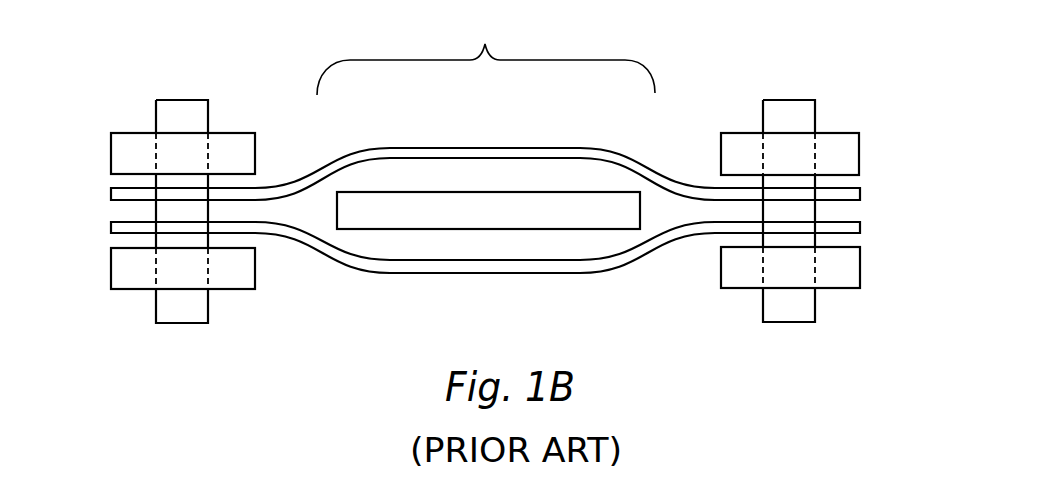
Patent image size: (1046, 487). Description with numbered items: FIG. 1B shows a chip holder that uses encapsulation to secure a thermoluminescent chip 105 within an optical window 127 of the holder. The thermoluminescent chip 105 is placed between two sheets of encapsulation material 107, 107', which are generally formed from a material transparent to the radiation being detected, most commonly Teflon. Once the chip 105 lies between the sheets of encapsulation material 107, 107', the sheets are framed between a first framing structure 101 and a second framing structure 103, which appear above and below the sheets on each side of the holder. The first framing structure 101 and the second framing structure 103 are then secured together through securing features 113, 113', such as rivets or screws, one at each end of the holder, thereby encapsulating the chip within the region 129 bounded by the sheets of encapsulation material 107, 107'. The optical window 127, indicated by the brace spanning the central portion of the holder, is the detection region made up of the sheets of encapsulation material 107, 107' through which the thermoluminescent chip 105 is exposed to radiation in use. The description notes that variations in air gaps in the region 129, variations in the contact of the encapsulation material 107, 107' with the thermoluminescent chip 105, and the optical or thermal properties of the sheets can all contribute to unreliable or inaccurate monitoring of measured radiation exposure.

The first framing structure 101 is at (111, 160).
The second framing structure 103 is at (111, 257).
The thermoluminescent chip 105 is at (518, 192).
The sheet of encapsulation material 107 is at (485, 145).
The sheet of encapsulation material 107' is at (485, 281).
The securing feature 113 is at (184, 179).
The securing feature 113' is at (789, 184).
The optical window 127 is at (486, 56).
The region 129 is at (438, 237).